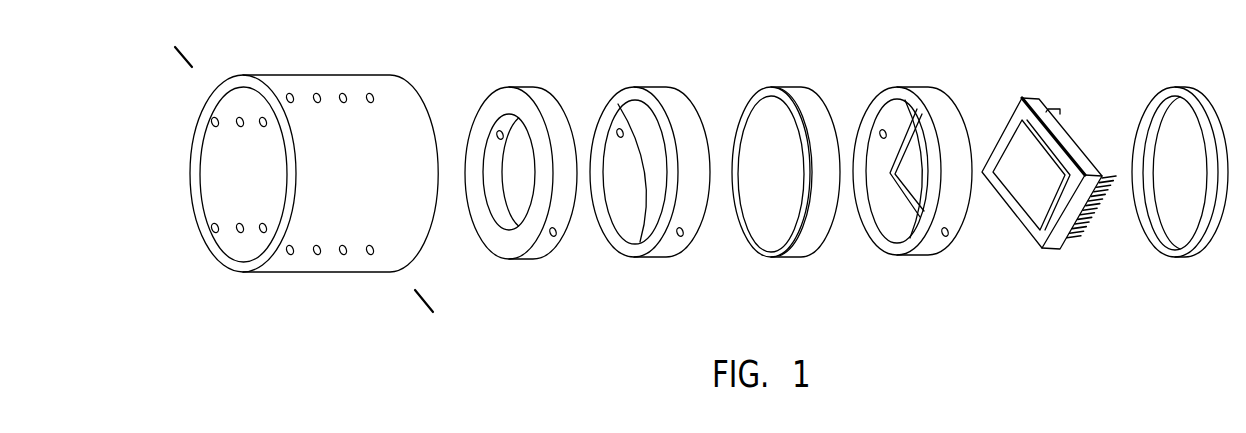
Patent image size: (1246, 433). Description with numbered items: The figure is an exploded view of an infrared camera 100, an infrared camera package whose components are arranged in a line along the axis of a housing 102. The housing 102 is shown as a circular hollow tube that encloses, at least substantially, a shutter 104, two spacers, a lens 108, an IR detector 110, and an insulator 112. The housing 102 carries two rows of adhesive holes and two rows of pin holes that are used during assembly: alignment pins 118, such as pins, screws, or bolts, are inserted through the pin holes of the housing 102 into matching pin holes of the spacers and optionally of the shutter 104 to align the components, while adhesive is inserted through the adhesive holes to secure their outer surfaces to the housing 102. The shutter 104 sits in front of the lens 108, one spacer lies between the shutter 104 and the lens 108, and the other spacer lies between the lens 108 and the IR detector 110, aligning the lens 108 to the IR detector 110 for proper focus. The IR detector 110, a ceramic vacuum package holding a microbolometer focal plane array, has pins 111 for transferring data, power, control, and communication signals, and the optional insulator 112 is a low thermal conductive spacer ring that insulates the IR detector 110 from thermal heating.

The infrared camera 100 is at (908, 330).
The housing 102 is at (391, 282).
The shutter 104 is at (522, 79).
The lens 108 is at (792, 79).
The IR detector 110 is at (1037, 84).
The pins 111 is at (1073, 257).
The insulator 112 is at (1187, 79).
The alignment pins 118 is at (187, 50).